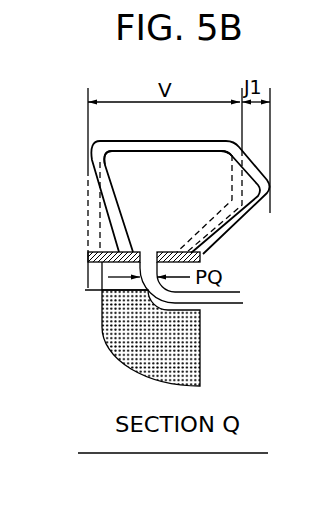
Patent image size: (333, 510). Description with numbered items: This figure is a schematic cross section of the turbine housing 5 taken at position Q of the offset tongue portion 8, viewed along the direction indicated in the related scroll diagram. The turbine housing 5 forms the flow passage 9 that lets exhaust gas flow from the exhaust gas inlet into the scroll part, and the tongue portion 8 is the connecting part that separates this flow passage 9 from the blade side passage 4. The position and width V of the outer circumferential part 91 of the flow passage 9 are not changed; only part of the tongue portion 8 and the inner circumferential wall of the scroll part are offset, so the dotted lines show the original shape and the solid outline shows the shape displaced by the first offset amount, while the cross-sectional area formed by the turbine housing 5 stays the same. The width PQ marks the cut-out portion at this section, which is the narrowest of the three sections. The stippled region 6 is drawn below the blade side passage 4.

The blade side passage 4 is at (101, 282).
The turbine housing 5 is at (236, 226).
The seal member 6 is at (192, 357).
The tongue portion 8 is at (130, 243).
The flow passage 9 is at (165, 172).
The outer circumferential part 91 is at (150, 139).